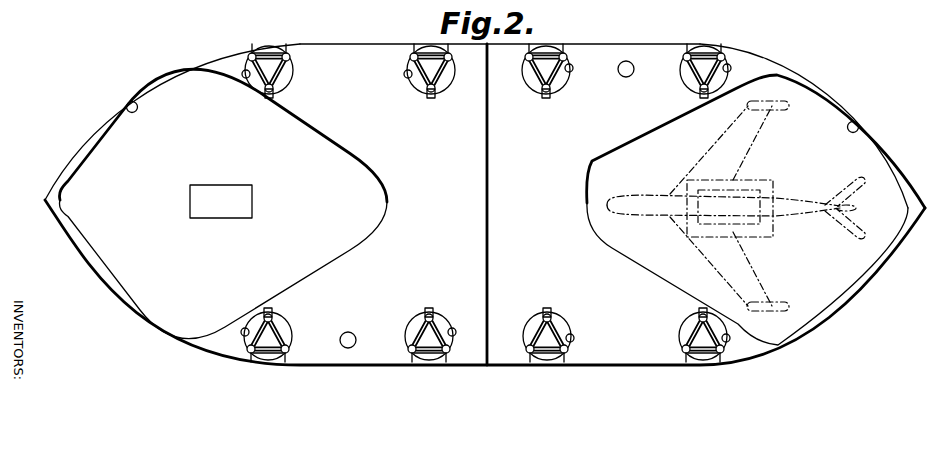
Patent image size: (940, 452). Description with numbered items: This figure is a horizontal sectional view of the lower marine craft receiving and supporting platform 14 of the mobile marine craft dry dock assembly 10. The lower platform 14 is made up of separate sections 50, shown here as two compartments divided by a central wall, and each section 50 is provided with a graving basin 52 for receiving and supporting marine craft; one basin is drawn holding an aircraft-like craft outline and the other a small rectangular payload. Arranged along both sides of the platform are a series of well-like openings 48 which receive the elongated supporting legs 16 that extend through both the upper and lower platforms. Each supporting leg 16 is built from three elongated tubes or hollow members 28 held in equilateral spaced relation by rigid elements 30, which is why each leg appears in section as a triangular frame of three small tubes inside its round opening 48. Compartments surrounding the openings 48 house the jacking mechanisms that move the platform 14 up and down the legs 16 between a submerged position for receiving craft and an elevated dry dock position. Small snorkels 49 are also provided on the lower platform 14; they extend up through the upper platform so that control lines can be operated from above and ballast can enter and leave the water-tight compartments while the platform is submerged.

The mobile marine craft dry dock assembly 10 is at (868, 83).
The lower marine craft receiving and supporting platform 14 is at (138, 319).
The supporting legs 16 is at (264, 47).
The hollow members 28 is at (275, 92).
The rigid elements 30 is at (277, 72).
The well-like openings 48 is at (246, 60).
The snorkels 49 is at (620, 62).
The sections 50 is at (364, 52).
The graving basin 52 is at (127, 108).